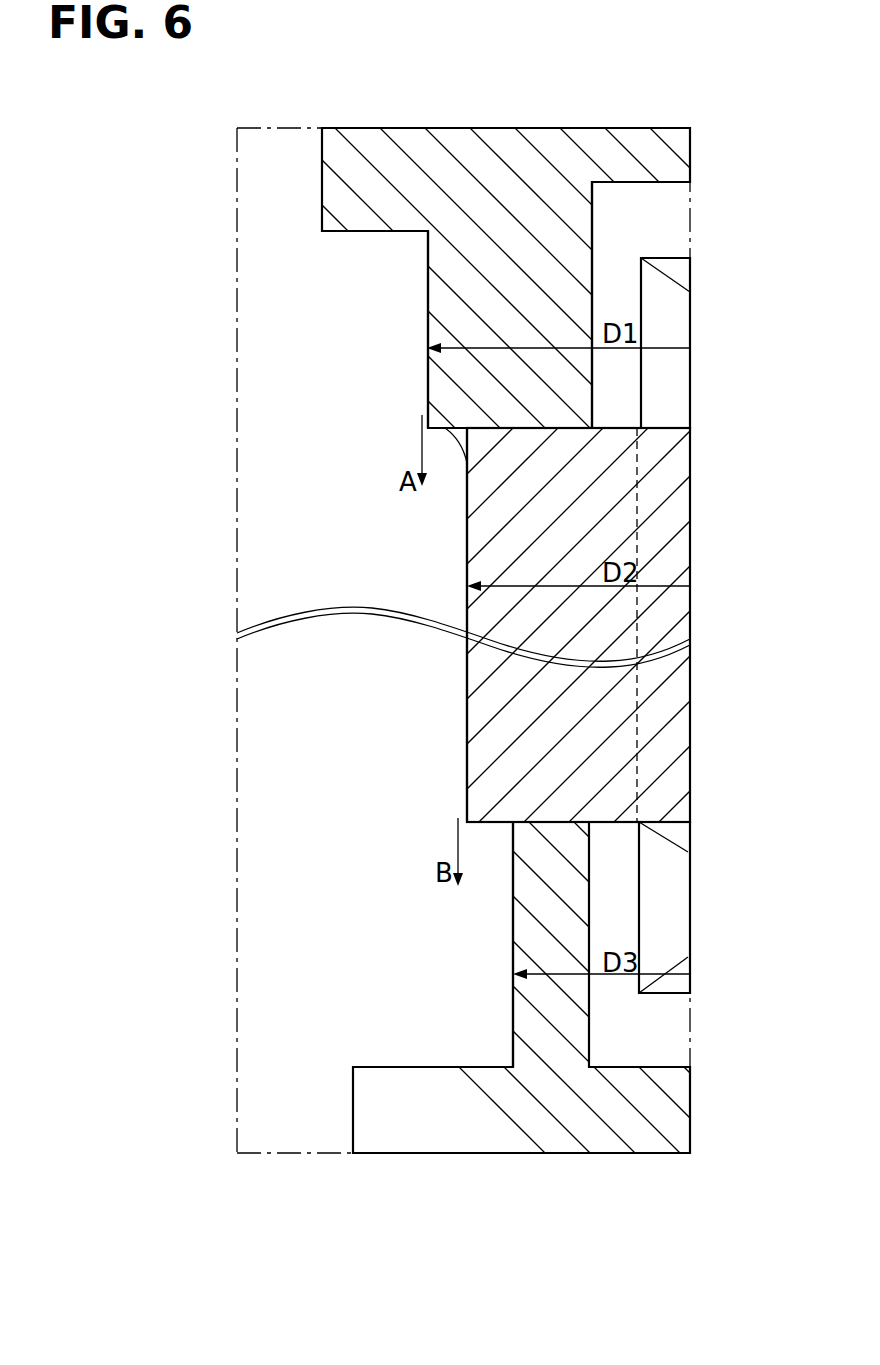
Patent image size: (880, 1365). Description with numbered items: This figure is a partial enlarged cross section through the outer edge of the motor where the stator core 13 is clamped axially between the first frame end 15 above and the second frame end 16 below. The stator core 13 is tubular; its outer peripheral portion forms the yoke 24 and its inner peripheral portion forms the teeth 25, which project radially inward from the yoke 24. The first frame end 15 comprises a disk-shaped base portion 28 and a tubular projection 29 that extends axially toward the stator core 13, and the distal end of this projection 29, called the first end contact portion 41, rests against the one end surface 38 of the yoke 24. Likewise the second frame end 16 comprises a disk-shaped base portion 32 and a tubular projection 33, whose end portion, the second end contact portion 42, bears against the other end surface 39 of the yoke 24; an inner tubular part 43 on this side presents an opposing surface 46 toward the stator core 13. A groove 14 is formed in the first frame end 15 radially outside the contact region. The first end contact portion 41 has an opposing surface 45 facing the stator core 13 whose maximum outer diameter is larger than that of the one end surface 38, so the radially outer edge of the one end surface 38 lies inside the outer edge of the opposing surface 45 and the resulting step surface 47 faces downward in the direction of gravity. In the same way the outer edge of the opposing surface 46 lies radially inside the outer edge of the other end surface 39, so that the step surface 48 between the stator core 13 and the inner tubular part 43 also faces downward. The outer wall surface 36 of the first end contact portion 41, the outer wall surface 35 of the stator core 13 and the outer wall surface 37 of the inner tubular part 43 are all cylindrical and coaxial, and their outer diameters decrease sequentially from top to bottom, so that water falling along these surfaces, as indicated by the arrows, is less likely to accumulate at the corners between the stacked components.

The stator core 13 is at (500, 690).
The groove 14 is at (668, 330).
The first frame end 15 is at (308, 191).
The second frame end 16 is at (339, 1118).
The yoke 24 is at (582, 614).
The teeth 25 is at (668, 558).
The base portion 28 is at (600, 148).
The projection 29 is at (508, 283).
The base portion 32 is at (618, 1120).
The projection 33 is at (555, 1005).
The outer wall surface 35 is at (467, 540).
The outer wall surface 36 is at (428, 332).
The outer wall surface 37 is at (513, 922).
The one end surface 38 is at (523, 428).
The other end surface 39 is at (549, 826).
The first end contact portion 41 is at (497, 404).
The second end contact portion 42 is at (605, 859).
The inner tubular part 43 is at (567, 836).
The opposing surface 45 is at (513, 438).
The opposing surface 46 is at (557, 822).
The step surface 47 is at (470, 465).
The step surface 48 is at (489, 822).